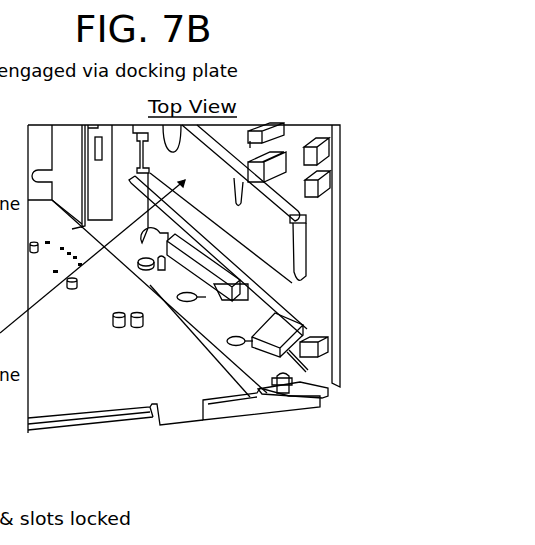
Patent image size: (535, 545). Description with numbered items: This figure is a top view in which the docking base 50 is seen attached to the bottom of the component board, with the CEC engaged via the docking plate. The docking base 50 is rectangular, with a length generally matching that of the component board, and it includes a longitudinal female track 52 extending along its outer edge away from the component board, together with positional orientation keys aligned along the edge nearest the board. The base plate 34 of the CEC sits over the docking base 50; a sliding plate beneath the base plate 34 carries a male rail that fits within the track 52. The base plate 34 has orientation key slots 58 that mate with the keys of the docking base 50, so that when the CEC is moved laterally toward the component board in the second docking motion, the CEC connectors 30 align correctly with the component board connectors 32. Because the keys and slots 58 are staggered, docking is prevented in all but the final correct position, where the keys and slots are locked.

The CEC connector 30 is at (277, 326).
The component board connector 32 is at (307, 348).
The base plate 34 is at (97, 395).
The docking base 50 is at (323, 403).
The female track 52 is at (233, 415).
The orientation key slot 58 is at (138, 268).